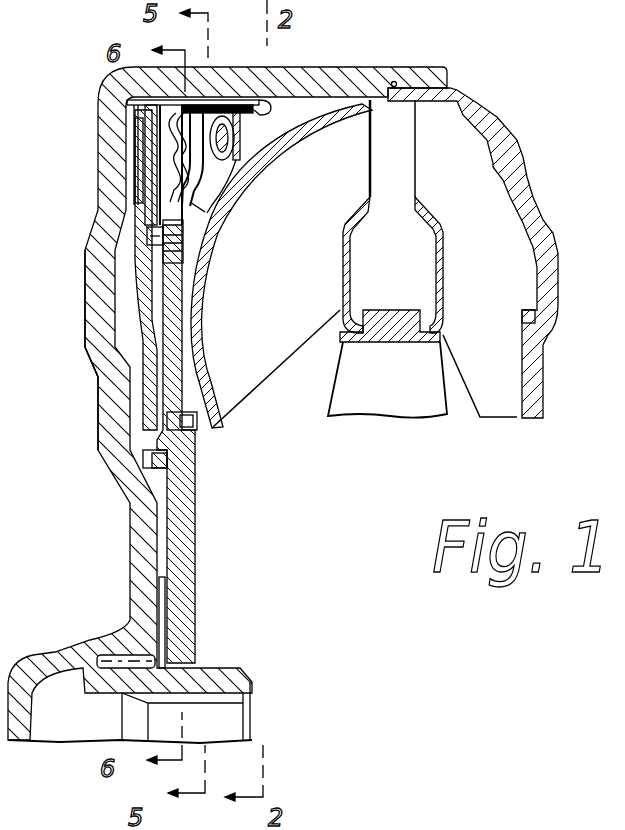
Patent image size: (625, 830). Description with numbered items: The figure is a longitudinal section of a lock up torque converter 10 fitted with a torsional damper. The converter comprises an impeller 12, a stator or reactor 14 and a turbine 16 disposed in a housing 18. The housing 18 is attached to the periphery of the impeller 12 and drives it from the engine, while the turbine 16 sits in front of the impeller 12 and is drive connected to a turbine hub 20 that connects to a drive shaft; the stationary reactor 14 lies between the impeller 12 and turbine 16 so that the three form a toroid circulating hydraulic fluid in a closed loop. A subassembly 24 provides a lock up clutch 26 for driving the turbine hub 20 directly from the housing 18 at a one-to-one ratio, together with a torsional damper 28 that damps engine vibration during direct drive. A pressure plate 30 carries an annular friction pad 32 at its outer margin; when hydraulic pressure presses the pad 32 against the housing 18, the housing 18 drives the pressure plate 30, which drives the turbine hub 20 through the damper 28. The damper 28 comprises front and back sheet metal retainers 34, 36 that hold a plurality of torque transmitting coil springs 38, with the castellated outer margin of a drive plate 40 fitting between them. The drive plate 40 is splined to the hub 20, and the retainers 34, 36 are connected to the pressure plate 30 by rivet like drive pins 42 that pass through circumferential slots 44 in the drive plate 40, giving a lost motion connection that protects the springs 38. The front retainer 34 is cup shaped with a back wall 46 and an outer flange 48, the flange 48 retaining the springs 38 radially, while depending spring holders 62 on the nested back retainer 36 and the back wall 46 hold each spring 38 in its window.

The lock up torque converter 10 is at (470, 88).
The impeller 12 is at (473, 147).
The stator or reactor 14 is at (398, 402).
The turbine 16 is at (357, 133).
The housing 18 is at (315, 78).
The turbine hub 20 is at (182, 630).
The subassembly 24 is at (135, 302).
The lock up clutch 26 is at (127, 367).
The torsional damper 28 is at (202, 210).
The pressure plate 30 is at (150, 182).
The annular friction pad 32 is at (135, 127).
The front sheet metal retainer 34 is at (143, 107).
The back sheet metal retainer 36 is at (235, 140).
The torque transmitting coil springs 38 is at (200, 168).
The drive plate 40 is at (173, 305).
The drive pins 42 is at (143, 232).
The circumferential slots 44 is at (153, 267).
The back wall 46 is at (155, 155).
The outer flange 48 is at (217, 107).
The depending spring holders 62 is at (237, 160).